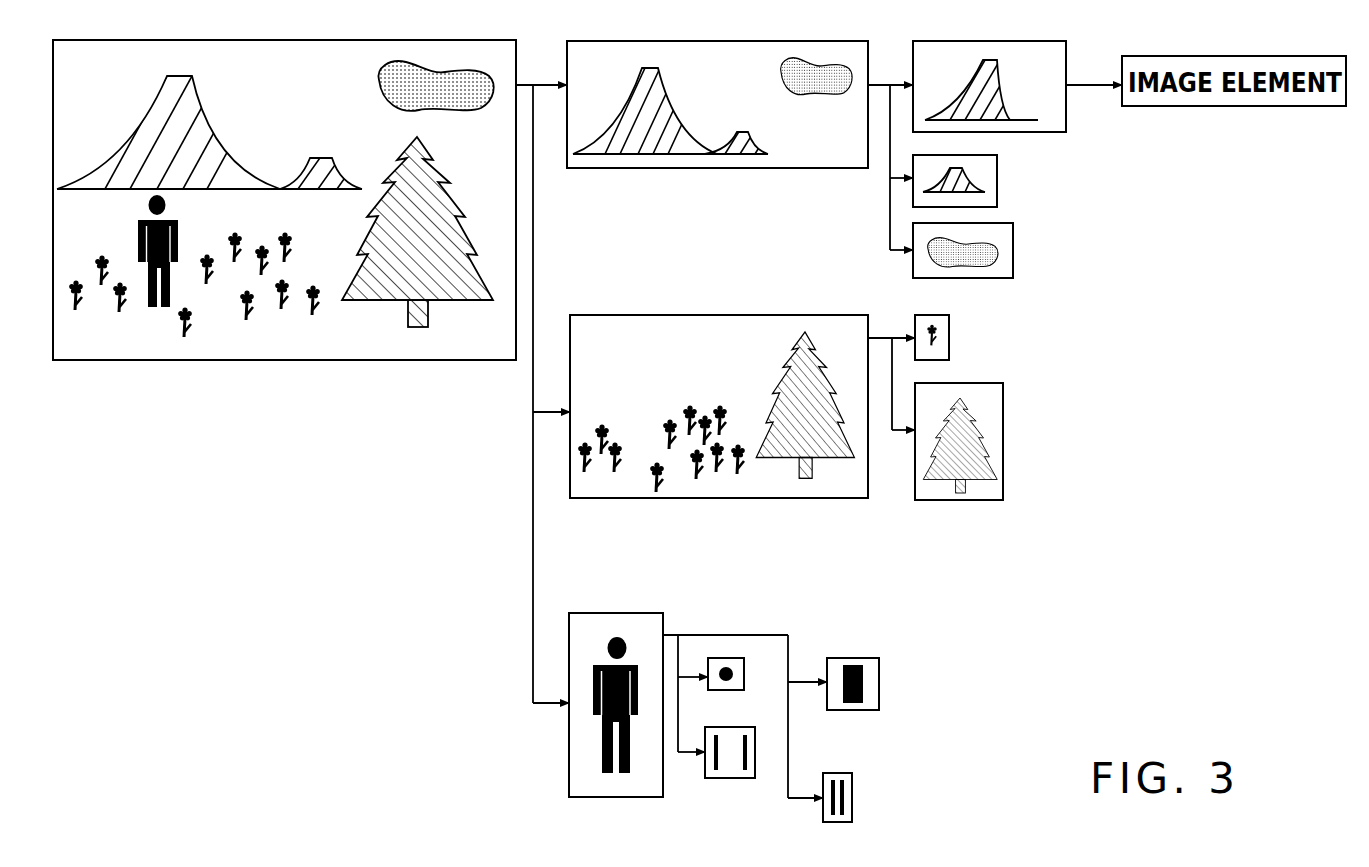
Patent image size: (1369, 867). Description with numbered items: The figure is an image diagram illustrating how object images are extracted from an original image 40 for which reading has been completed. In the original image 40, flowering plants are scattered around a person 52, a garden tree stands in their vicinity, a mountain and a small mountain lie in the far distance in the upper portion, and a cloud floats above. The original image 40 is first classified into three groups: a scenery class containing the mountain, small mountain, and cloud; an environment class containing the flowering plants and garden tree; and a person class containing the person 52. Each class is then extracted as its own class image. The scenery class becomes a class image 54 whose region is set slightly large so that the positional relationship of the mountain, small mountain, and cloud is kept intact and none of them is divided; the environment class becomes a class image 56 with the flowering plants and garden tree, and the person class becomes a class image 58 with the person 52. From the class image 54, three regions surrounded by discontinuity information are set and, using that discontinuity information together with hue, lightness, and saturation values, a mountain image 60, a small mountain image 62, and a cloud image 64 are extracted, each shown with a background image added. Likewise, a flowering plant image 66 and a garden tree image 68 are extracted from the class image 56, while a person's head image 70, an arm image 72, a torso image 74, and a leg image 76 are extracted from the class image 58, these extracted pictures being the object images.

The original image 40 is at (333, 40).
The person 52 is at (177, 232).
The class image 54 is at (698, 40).
The class image 56 is at (667, 313).
The class image 58 is at (592, 610).
The mountain image 60 is at (987, 40).
The small mountain image 62 is at (997, 187).
The cloud image 64 is at (1013, 265).
The flowering plant image 66 is at (950, 338).
The garden tree image 68 is at (1003, 413).
The person's head image 70 is at (725, 657).
The arm image 72 is at (723, 727).
The torso image 74 is at (843, 657).
The leg image 76 is at (835, 773).